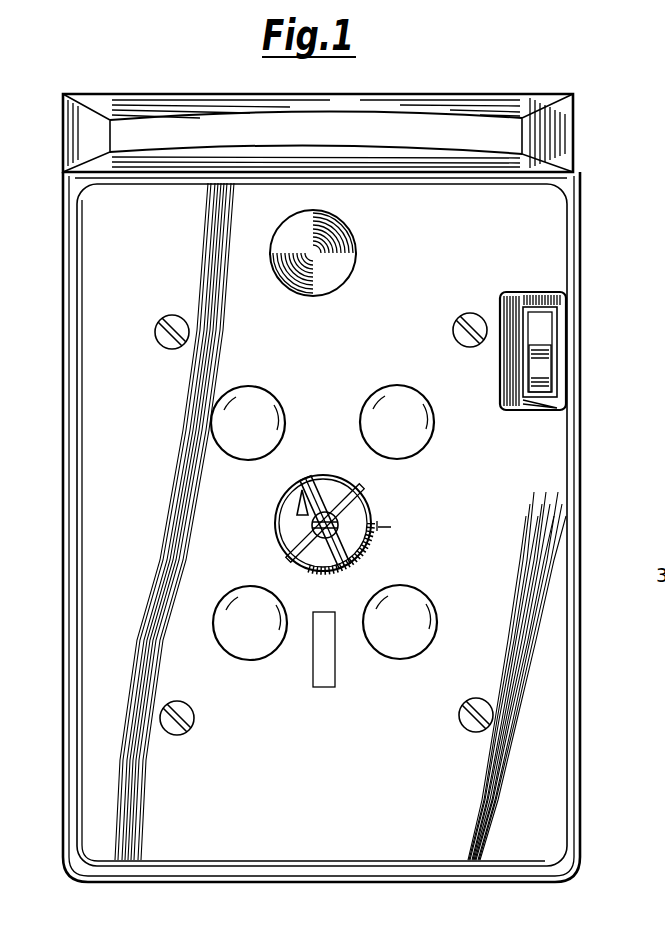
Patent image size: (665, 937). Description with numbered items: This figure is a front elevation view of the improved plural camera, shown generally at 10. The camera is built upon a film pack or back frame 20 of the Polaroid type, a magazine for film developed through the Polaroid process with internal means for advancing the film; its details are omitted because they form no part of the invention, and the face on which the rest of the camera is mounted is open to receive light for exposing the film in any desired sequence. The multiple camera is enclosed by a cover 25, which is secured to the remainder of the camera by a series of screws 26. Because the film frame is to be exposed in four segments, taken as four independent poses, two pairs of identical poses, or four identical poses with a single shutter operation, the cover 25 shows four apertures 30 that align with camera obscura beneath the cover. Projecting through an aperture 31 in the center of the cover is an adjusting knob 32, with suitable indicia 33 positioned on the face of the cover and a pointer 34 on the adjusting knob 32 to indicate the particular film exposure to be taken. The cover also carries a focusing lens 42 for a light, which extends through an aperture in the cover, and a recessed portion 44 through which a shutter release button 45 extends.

The plural camera 10 is at (622, 301).
The film pack or back frame 20 is at (570, 130).
The cover 25 is at (545, 236).
The screws 26 is at (458, 322).
The apertures 30 is at (432, 430).
The aperture 31 is at (360, 492).
The adjusting knob 32 is at (346, 483).
The indicia 33 is at (440, 520).
The pointer 34 is at (300, 505).
The focusing lens 42 is at (357, 256).
The recessed portion 44 is at (565, 390).
The shutter release button 45 is at (545, 356).